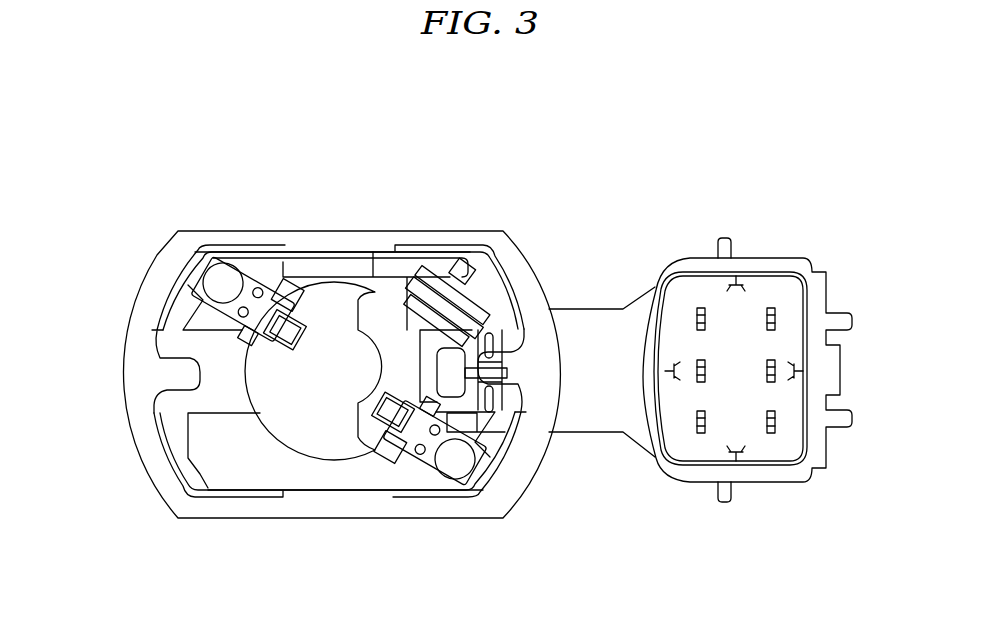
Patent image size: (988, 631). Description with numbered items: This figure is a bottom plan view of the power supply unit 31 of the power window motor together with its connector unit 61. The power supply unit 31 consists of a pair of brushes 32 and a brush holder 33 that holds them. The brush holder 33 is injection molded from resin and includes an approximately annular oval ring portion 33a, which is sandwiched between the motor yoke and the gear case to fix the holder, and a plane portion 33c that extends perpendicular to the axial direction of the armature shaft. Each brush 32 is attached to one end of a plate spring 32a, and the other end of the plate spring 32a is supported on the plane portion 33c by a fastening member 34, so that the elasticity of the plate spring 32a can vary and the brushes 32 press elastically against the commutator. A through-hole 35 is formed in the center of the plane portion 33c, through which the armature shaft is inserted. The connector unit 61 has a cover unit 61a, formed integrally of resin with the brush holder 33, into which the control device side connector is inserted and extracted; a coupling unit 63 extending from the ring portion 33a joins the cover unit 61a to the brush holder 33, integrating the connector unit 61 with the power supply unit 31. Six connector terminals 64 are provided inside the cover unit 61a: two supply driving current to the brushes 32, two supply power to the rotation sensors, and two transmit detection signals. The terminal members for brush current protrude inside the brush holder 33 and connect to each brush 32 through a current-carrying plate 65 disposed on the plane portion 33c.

The power supply unit 31 is at (570, 210).
The brush 32 is at (292, 327).
The plate spring 32a is at (237, 345).
The brush holder 33 is at (183, 227).
The ring portion 33a is at (157, 276).
The plane portion 33c is at (217, 397).
The fastening member 34 is at (223, 282).
The through-hole 35 is at (313, 410).
The connector unit 61 is at (792, 250).
The cover unit 61a is at (765, 271).
The coupling unit 63 is at (587, 402).
The connector terminal 64 is at (697, 316).
The current-carrying plate 65 is at (352, 268).